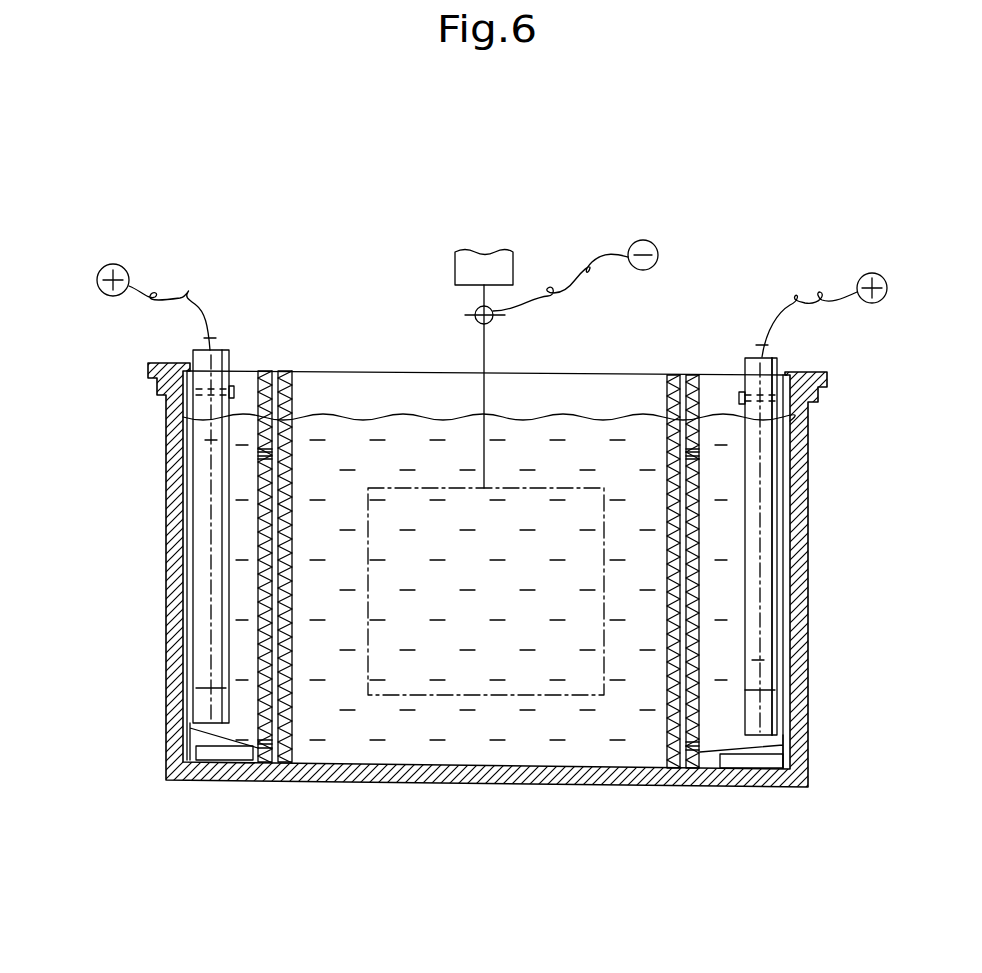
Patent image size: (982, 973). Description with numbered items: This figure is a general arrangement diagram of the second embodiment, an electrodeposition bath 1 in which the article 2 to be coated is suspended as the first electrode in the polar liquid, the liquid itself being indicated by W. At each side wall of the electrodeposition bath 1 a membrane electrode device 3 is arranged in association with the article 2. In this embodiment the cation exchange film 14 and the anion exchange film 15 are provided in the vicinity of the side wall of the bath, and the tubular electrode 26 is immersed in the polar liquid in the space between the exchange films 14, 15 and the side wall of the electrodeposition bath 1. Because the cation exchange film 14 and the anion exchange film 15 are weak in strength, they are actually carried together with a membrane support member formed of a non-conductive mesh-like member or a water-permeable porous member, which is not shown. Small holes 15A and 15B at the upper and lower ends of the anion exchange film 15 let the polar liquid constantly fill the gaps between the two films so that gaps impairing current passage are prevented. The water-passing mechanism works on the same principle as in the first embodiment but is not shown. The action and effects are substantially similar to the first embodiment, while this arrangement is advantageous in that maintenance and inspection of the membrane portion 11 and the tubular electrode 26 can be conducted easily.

The electrodeposition bath 1 is at (808, 670).
The article to be coated 2 is at (535, 697).
The membrane electrode device 3 is at (775, 438).
The membrane portion 11 is at (257, 488).
The cation exchange film 14 is at (286, 368).
The anion exchange film 15 is at (258, 368).
The small hole 15A is at (257, 452).
The small hole 15B is at (185, 725).
The tubular electrode 26 is at (203, 542).
The electrolyte W is at (342, 728).